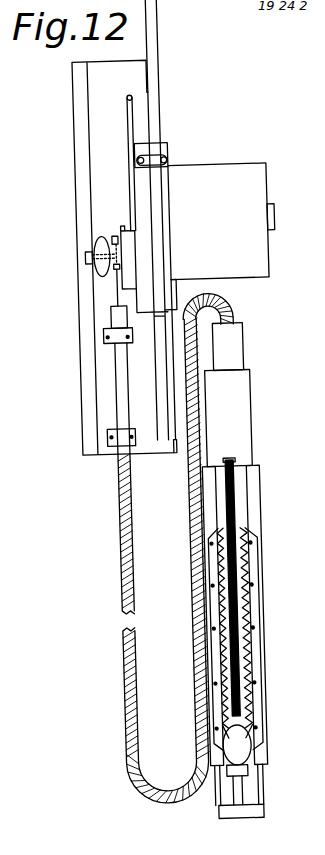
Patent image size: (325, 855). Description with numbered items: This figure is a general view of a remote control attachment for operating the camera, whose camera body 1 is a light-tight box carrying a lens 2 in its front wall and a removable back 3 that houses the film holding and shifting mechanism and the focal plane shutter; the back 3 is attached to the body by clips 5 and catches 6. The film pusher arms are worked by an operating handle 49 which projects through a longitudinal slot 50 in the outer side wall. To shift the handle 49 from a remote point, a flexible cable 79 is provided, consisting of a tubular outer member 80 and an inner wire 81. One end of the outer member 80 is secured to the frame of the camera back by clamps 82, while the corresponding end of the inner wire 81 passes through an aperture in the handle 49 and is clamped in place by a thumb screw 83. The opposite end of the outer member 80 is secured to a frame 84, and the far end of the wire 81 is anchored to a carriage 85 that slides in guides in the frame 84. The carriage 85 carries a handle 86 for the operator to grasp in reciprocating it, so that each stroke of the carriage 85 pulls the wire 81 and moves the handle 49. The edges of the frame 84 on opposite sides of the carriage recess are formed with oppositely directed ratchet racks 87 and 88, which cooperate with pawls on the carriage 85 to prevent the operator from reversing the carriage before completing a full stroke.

The camera body 1 is at (230, 162).
The lens 2 is at (273, 211).
The removable back 3 is at (168, 91).
The clips 5 is at (178, 297).
The catches 6 is at (167, 151).
The operating handle 49 is at (98, 266).
The longitudinal slot 50 is at (131, 96).
The flexible cable 79 is at (118, 504).
The tubular outer member 80 is at (124, 557).
The inner wire 81 is at (231, 506).
The clamps 82 is at (106, 334).
The thumb screw 83 is at (85, 256).
The frame 84 is at (260, 446).
The carriage 85 is at (248, 778).
The handle 86 is at (243, 755).
The ratchet rack 87 is at (212, 612).
The ratchet rack 88 is at (256, 606).